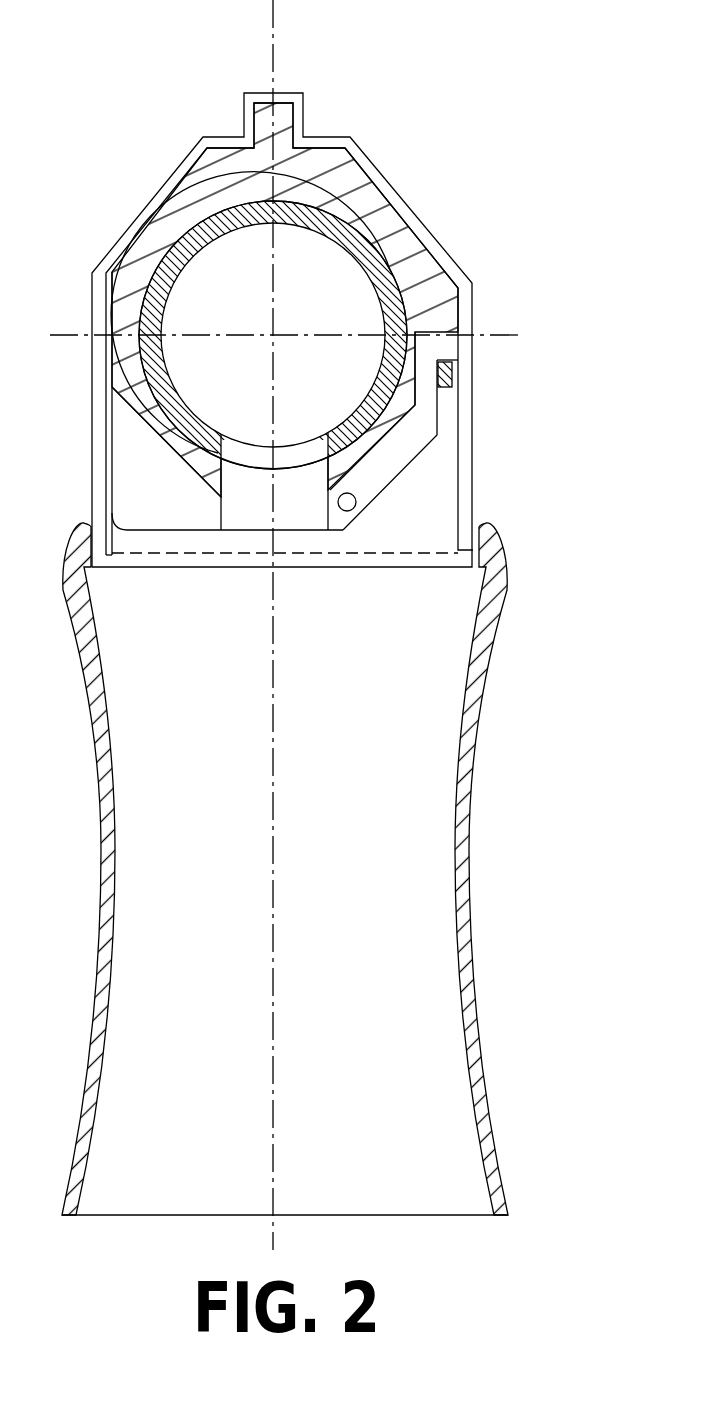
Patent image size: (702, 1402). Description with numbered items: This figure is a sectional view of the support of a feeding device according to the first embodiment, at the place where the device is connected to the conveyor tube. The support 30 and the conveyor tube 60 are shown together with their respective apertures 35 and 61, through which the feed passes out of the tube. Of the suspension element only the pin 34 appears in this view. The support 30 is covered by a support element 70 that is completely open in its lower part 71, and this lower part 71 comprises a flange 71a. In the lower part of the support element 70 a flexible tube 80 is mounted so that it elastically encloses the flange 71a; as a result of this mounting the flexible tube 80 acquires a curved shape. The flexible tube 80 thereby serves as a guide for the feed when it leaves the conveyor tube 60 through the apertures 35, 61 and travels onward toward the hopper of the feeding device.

The support 30 is at (358, 212).
The pin 34 is at (357, 502).
The aperture 35 is at (277, 516).
The tube 60 is at (178, 276).
The aperture 61 is at (292, 458).
The support element 70 is at (472, 300).
The lower part 71 is at (472, 485).
The flange 71a is at (345, 553).
The flexible tube 80 is at (470, 982).